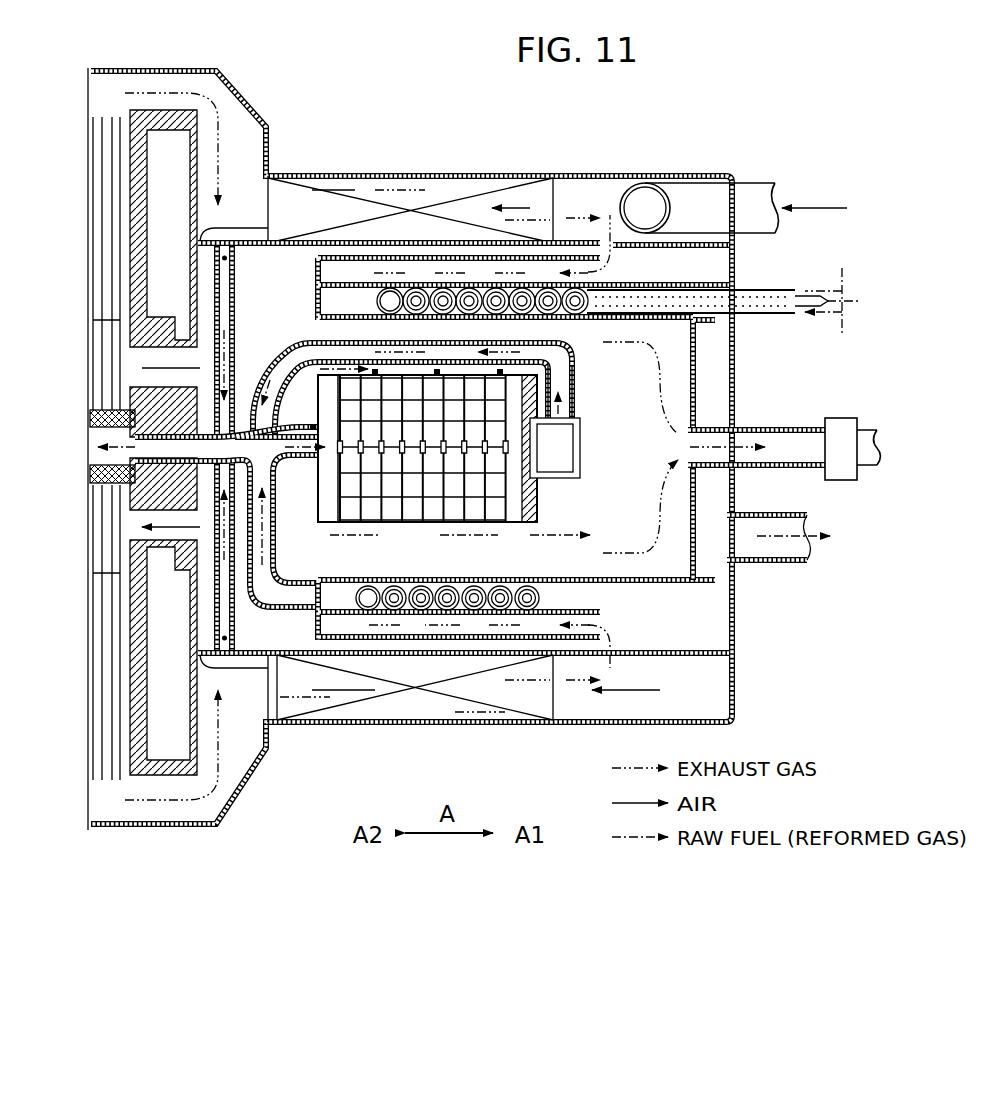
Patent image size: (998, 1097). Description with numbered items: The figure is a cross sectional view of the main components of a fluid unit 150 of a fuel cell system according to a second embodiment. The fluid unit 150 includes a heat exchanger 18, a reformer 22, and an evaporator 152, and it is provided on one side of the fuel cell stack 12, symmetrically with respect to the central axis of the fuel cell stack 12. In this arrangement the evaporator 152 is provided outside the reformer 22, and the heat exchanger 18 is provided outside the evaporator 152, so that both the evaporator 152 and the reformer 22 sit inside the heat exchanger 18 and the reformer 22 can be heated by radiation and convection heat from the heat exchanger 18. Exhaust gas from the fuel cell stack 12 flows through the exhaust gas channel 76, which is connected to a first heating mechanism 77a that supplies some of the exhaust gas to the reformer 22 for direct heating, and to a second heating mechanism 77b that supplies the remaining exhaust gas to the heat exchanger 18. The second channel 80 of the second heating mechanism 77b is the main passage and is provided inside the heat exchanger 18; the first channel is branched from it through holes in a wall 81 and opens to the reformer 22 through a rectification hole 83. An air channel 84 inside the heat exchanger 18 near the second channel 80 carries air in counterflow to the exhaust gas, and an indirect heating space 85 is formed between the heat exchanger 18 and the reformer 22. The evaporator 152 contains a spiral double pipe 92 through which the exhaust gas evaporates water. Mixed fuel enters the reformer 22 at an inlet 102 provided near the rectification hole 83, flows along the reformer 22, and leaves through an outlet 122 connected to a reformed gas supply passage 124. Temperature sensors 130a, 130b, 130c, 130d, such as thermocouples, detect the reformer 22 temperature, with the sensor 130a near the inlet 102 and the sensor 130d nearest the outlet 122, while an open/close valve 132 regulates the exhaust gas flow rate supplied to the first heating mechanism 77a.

The fuel cell stack 12 is at (104, 92).
The heat exchanger 18 is at (430, 172).
The reformer 22 is at (388, 528).
The exhaust gas channel 76 is at (250, 194).
The first heating mechanism 77a is at (220, 308).
The second heating mechanism 77b is at (355, 552).
The second channel 80 is at (404, 172).
The wall 81 is at (230, 562).
The rectification hole 83 is at (240, 458).
The air channel 84 is at (509, 198).
The indirect heating space 85 is at (484, 549).
The double pipe 92 is at (509, 593).
The inlet 102 is at (308, 462).
The outlet 122 is at (568, 448).
The reformed gas supply passage 124 is at (573, 394).
The temperature sensor 130a is at (311, 425).
The temperature sensor 130b is at (372, 368).
The temperature sensor 130c is at (440, 368).
The temperature sensor 130d is at (592, 256).
The open/close valve 132 is at (843, 470).
The fluid unit 150 is at (787, 122).
The evaporator 152 is at (502, 368).